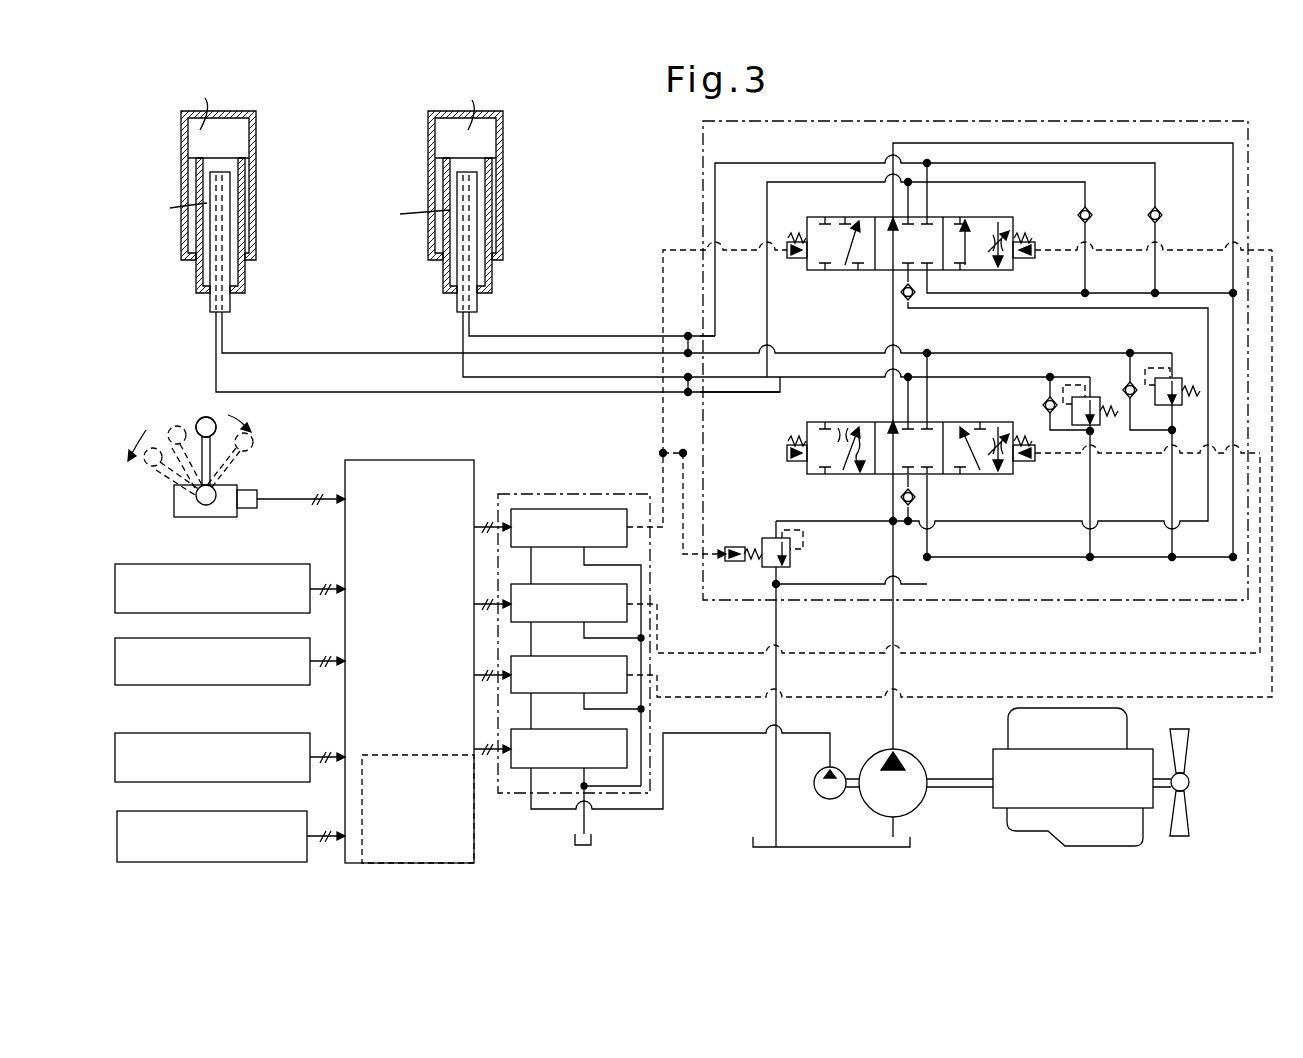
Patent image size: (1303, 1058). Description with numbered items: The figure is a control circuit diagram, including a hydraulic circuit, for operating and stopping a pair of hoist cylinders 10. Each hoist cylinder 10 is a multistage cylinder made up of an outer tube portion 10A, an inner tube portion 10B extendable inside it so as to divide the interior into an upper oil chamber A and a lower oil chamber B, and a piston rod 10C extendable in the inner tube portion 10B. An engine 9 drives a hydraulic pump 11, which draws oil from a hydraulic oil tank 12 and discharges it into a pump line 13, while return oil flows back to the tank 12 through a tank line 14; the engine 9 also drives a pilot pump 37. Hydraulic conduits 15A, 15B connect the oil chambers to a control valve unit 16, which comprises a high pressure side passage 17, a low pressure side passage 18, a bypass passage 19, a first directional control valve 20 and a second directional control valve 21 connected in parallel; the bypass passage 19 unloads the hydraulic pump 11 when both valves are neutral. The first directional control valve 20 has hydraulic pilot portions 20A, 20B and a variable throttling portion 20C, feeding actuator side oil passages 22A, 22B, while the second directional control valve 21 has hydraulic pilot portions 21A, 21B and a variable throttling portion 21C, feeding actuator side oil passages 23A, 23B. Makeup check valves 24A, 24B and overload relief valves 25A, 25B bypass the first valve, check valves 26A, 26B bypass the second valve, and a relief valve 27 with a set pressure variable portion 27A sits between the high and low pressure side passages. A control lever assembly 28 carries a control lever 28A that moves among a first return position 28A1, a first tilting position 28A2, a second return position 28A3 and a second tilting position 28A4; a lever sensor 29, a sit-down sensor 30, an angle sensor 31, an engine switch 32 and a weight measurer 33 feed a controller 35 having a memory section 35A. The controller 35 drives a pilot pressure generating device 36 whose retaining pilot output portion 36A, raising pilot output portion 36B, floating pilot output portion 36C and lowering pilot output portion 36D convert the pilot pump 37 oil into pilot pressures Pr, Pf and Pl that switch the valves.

The engine 9 is at (1107, 796).
The hoist cylinder 10 is at (255, 111).
The outer tube portion 10A is at (256, 142).
The inner tube portion 10B is at (250, 213).
The piston rod 10C is at (210, 300).
The hydraulic pump 11 is at (921, 759).
The hydraulic oil tank 12 is at (591, 841).
The pump line 13 is at (894, 632).
The tank line 14 is at (777, 628).
The hydraulic conduit 15A is at (285, 351).
The hydraulic conduit 15B is at (462, 377).
The control valve unit 16 is at (1143, 121).
The high pressure side passage 17 is at (1056, 522).
The low pressure side passage 18 is at (1162, 558).
The bypass passage 19 is at (894, 316).
The first directional control valve 20 is at (861, 476).
The hydraulic pilot portion 20A is at (792, 463).
The hydraulic pilot portion 20B is at (1025, 462).
The variable throttling portion 20C is at (982, 476).
The second directional control valve 21 is at (880, 272).
The hydraulic pilot portion 21A is at (797, 260).
The hydraulic pilot portion 21B is at (1025, 259).
The variable throttling portion 21C is at (1004, 237).
The actuator side oil passage 22A is at (740, 337).
The actuator side oil passage 22B is at (772, 393).
The actuator side oil passage 23A is at (715, 200).
The actuator side oil passage 23B is at (767, 185).
The check valve 24A is at (1128, 382).
The check valve 24B is at (1048, 398).
The relief valve 25A is at (1170, 377).
The relief valve 25B is at (1096, 428).
The check valve 26A is at (1157, 211).
The check valve 26B is at (1087, 211).
The relief valve 27 is at (791, 556).
The set pressure variable portion 27A is at (737, 547).
The control lever assembly 28 is at (183, 517).
The control lever 28A is at (215, 468).
The first return position 28A1 is at (204, 415).
The first tilting position 28A2 is at (253, 440).
The second return position 28A3 is at (168, 432).
The second tilting position 28A4 is at (146, 462).
The lever sensor 29 is at (258, 503).
The sit-down sensor 30 is at (193, 564).
The angle sensor 31 is at (162, 686).
The engine switch 32 is at (218, 733).
The weight measurer 33 is at (212, 863).
The controller 35 is at (396, 460).
The memory section 35A is at (411, 866).
The pilot pressure generating device 36 is at (592, 494).
The retaining pilot output portion 36A is at (527, 769).
The raising pilot output portion 36B is at (562, 509).
The floating pilot output portion 36C is at (627, 604).
The lowering pilot output portion 36D is at (627, 675).
The pilot pump 37 is at (819, 798).